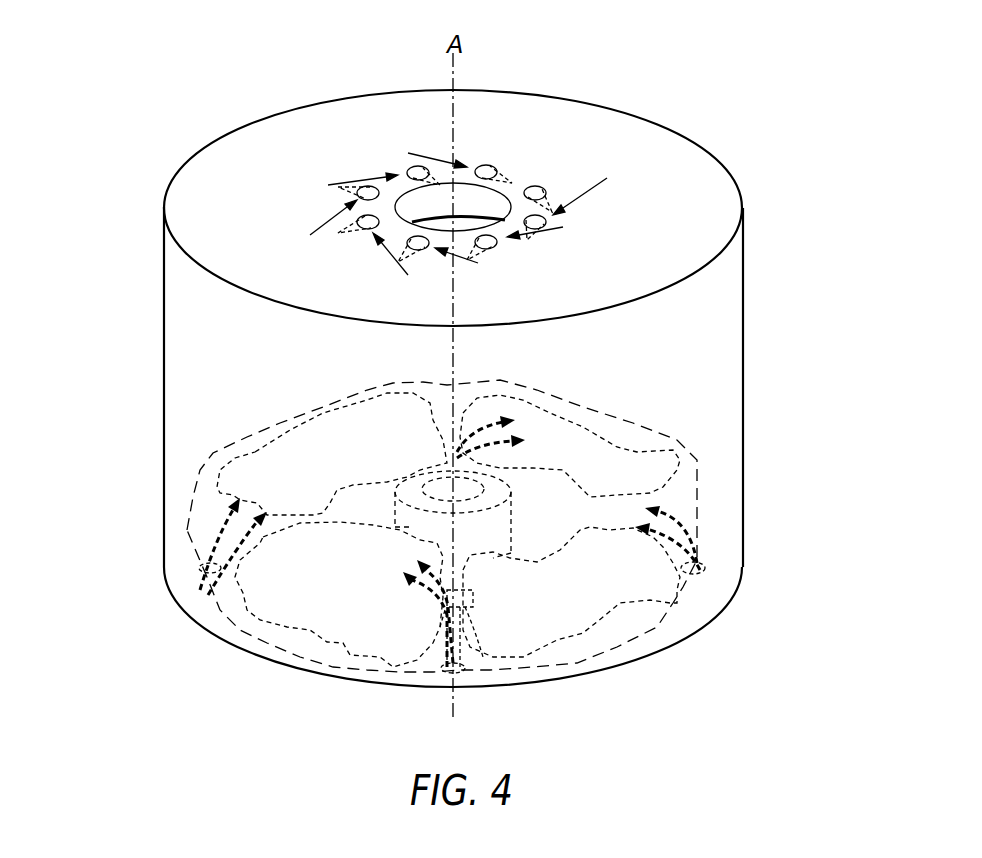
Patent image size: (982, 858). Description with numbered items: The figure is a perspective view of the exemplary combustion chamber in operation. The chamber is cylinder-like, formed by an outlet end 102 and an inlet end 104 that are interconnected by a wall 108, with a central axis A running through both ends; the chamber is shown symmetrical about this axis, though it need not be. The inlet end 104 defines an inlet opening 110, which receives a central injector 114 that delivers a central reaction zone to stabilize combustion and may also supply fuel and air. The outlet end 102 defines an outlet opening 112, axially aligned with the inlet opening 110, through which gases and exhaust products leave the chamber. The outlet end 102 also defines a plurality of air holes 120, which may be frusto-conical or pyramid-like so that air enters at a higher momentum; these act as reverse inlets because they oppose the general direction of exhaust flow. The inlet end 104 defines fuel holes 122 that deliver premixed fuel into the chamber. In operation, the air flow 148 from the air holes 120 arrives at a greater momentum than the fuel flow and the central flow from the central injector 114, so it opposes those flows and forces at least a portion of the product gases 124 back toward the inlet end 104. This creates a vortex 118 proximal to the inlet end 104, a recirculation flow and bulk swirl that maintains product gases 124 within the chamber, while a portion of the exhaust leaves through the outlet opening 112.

The outlet end 102 is at (692, 180).
The inlet end 104 is at (697, 614).
The wall 108 is at (743, 243).
The inlet opening 110 is at (478, 590).
The outlet opening 112 is at (447, 200).
The central injector 114 is at (427, 540).
The vortex 118 is at (682, 435).
The air holes 120 is at (490, 170).
The fuel holes 122 is at (233, 497).
The product gases 124 is at (660, 466).
The air flow 148 is at (334, 184).